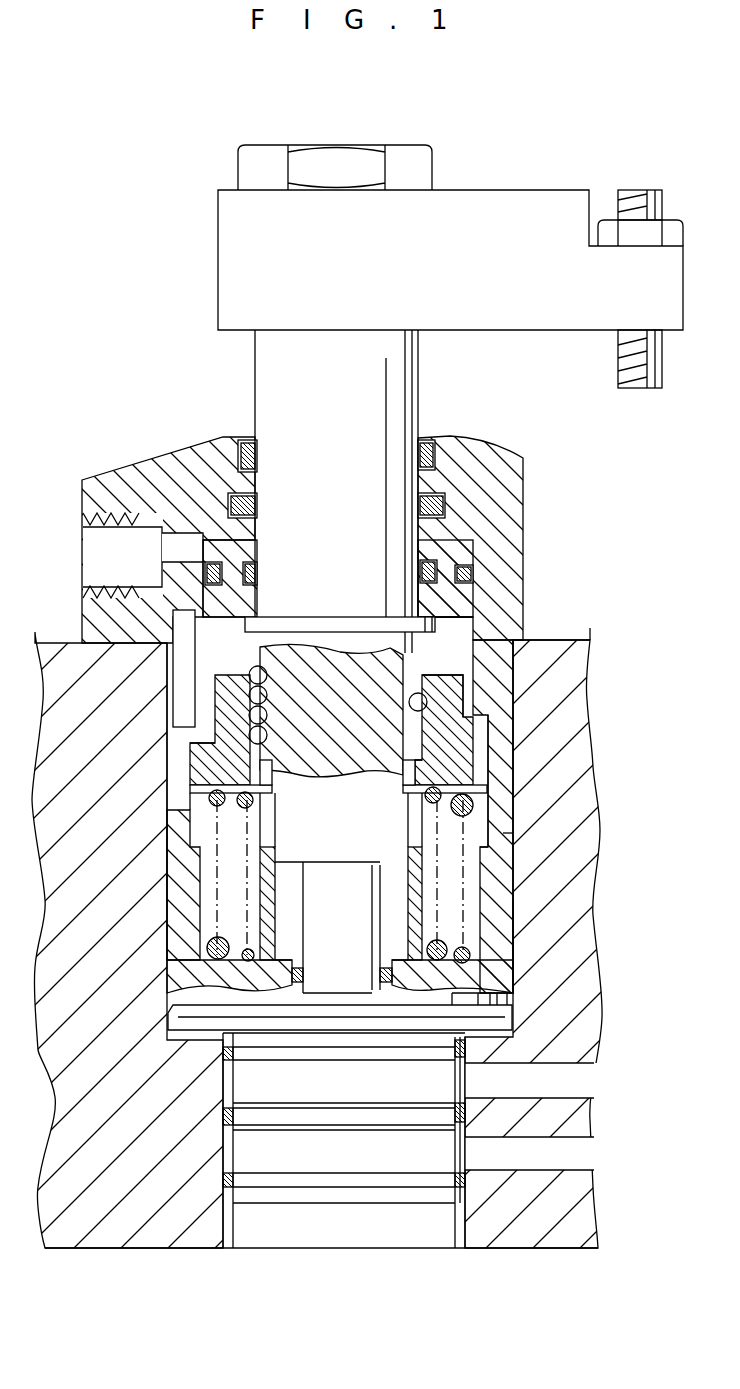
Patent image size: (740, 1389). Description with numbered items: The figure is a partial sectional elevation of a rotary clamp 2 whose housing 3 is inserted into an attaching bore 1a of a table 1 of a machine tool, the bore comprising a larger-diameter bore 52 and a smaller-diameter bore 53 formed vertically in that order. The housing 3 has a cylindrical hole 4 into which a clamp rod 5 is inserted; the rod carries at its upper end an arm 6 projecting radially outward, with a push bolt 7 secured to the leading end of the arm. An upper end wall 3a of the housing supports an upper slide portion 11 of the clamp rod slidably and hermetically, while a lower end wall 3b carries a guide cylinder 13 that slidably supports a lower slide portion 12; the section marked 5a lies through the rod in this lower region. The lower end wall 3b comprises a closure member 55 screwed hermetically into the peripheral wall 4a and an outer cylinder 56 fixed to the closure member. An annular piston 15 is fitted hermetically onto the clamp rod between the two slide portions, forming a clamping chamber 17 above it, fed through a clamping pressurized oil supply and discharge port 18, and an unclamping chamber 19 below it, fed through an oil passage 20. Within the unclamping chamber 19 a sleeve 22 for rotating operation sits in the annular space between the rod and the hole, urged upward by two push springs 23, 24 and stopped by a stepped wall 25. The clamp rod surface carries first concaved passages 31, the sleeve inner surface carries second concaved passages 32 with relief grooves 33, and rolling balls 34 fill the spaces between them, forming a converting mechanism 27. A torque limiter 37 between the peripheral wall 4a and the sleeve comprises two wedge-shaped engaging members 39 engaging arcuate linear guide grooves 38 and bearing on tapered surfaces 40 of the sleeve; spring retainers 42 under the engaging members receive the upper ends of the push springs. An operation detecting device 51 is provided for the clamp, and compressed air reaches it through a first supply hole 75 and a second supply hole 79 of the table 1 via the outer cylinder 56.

The table 1 is at (341, 937).
The attaching bore 1a is at (588, 626).
The clamp 2 is at (349, 709).
The housing 3 is at (318, 522).
The upper end wall 3a is at (483, 457).
The lower end wall 3b is at (507, 1002).
The cylindrical hole 4 is at (473, 868).
The peripheral wall 4a is at (503, 833).
The clamp rod 5 is at (420, 380).
The section line of rod 5a is at (337, 959).
The arm 6 is at (541, 190).
The push bolt 7 is at (662, 370).
The upper slide portion 11 is at (273, 480).
The lower slide portion 12 is at (315, 848).
The guide cylinder 13 is at (263, 847).
The annular piston 15 is at (465, 598).
The clamping chamber 17 is at (200, 548).
The clamping pressurized oil supply and discharge port 18 is at (95, 570).
The unclamping chamber 19 is at (203, 875).
The oil passage 20 is at (180, 672).
The sleeve 22 is at (473, 733).
The push spring 23 is at (207, 947).
The push spring 24 is at (247, 960).
The stepped wall 25 is at (480, 707).
The converting mechanism 27 is at (288, 658).
The first concaved passage 31 is at (407, 722).
The second concaved passage 32 is at (410, 695).
The relief groove 33 is at (257, 672).
The rolling ball 34 is at (268, 733).
The torque limiter 37 is at (180, 773).
The linear guide groove 38 is at (487, 817).
The engaging member 39 is at (187, 763).
The tapered surface 40 is at (458, 757).
The spring retainer 42 is at (167, 810).
The operation detecting device 51 is at (187, 1120).
The larger-diameter bore 52 is at (507, 928).
The smaller-diameter bore 53 is at (457, 1227).
The closure member 55 is at (173, 1007).
The outer cylinder 56 is at (233, 1080).
The first supply hole 75 is at (575, 1153).
The second supply hole 79 is at (578, 1083).